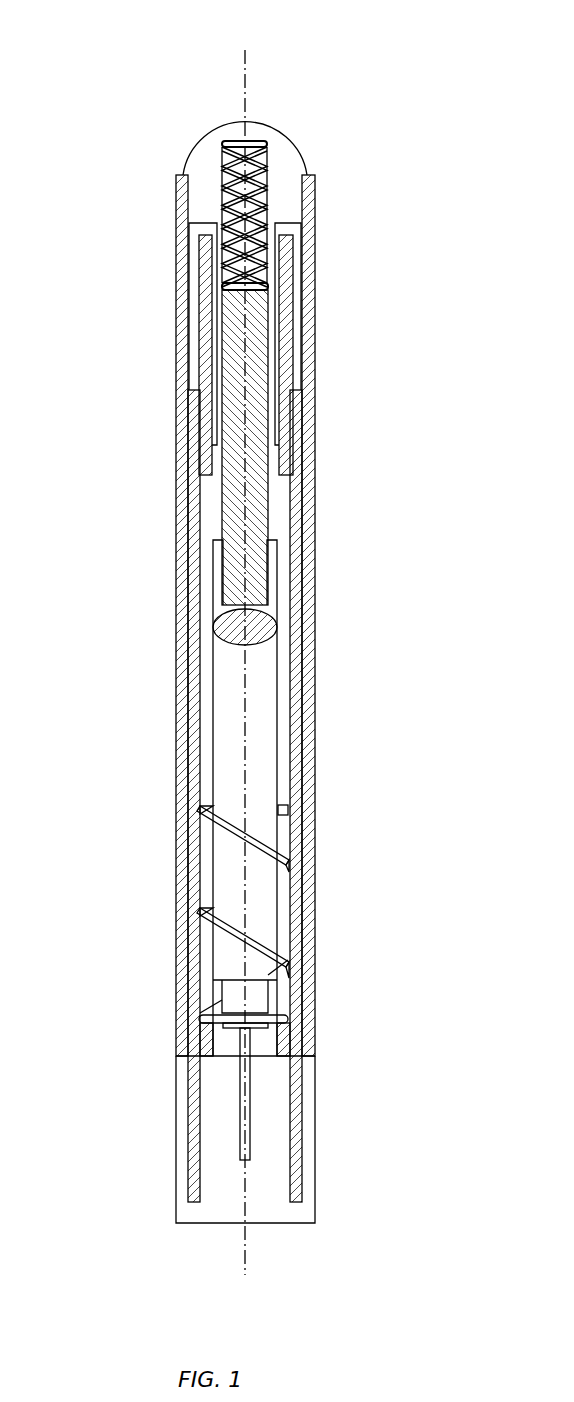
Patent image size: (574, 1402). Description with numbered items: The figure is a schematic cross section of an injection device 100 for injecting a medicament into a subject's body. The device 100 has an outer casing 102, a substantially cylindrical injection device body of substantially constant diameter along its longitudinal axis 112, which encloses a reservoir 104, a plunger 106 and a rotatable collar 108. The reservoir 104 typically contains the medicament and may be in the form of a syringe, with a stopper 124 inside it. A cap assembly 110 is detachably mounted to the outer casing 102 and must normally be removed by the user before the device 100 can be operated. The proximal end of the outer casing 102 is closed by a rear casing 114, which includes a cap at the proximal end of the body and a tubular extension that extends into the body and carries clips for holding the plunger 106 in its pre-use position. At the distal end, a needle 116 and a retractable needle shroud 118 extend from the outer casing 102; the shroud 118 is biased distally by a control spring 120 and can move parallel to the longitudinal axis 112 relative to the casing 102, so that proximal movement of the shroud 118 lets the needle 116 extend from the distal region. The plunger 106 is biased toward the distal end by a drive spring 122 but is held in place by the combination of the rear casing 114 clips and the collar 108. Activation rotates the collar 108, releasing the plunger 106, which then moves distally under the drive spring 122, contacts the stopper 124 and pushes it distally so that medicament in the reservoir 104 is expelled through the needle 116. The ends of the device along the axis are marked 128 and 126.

The injection device 100 is at (188, 66).
The outer casing 102 is at (316, 268).
The reservoir 104 is at (213, 707).
The plunger 106 is at (265, 503).
The rotatable collar 108 is at (198, 297).
The cap assembly 110 is at (176, 1178).
The longitudinal axis 112 is at (247, 77).
The rear casing 114 is at (197, 131).
The needle 116 is at (250, 1140).
The retractable needle shroud 118 is at (188, 1088).
The control spring 120 is at (282, 850).
The drive spring 122 is at (265, 153).
The stopper 124 is at (277, 622).
The lower end 126 is at (266, 1303).
The upper end 128 is at (266, 44).